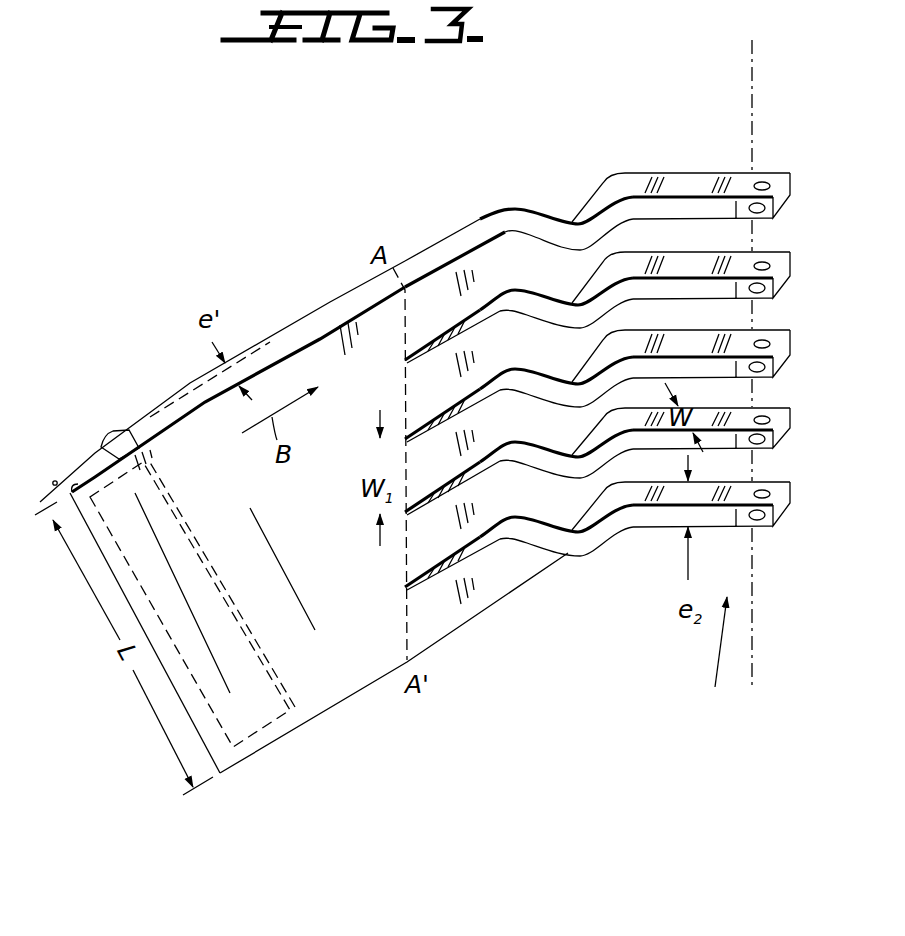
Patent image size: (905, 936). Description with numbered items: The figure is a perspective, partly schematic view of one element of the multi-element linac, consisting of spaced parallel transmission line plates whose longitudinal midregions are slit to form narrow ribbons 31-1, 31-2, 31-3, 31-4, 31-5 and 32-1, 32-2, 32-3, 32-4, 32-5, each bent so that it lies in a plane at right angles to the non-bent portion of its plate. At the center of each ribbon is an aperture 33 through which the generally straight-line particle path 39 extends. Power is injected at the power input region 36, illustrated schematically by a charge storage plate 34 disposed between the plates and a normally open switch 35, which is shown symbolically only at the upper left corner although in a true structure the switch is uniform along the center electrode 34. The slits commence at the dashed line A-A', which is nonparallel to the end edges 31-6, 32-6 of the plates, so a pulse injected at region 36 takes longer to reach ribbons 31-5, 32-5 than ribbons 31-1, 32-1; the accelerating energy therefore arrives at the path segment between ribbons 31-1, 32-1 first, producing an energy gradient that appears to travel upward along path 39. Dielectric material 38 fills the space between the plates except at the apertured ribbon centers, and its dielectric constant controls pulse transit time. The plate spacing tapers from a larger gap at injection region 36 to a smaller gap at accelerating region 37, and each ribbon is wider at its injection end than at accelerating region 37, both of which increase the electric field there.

The ribbon 31-1 is at (658, 495).
The ribbon 31-2 is at (643, 427).
The ribbon 31-3 is at (663, 340).
The ribbon 31-4 is at (657, 265).
The ribbon 31-5 is at (653, 178).
The end edge 31-6 is at (193, 735).
The ribbon 32-1 is at (695, 528).
The ribbon 32-2 is at (690, 451).
The ribbon 32-3 is at (666, 380).
The ribbon 32-4 is at (655, 301).
The ribbon 32-5 is at (655, 221).
The end edge 32-6 is at (100, 448).
The aperture 33 is at (765, 180).
The charge storage plate 34 is at (106, 440).
The normally open switch 35 is at (50, 482).
The power input region 36 is at (233, 775).
The accelerating region 37 is at (708, 660).
The dielectric material 38 is at (246, 361).
The particle path 39 is at (752, 62).